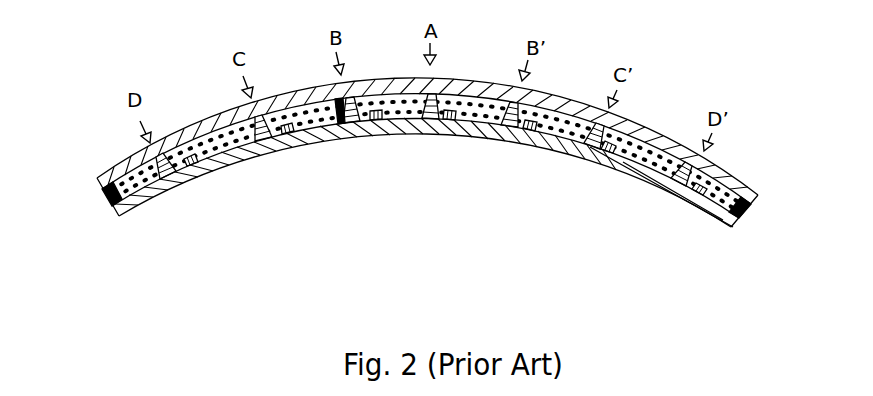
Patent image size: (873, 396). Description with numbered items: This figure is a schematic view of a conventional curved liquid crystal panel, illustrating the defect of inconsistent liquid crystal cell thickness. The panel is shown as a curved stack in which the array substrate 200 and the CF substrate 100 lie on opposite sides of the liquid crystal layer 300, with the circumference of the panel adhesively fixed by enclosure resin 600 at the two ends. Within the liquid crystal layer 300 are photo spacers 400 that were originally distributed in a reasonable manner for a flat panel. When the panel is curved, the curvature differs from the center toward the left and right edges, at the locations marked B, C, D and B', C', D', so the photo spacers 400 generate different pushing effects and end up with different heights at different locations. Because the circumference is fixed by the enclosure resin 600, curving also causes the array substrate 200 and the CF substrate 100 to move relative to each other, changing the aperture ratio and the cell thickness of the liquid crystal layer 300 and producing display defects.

The CF substrate 100 is at (680, 197).
The array substrate 200 is at (713, 165).
The liquid crystal layer 300 is at (146, 208).
The photo spacers 400 is at (386, 118).
The enclosure resin 600 is at (112, 198).